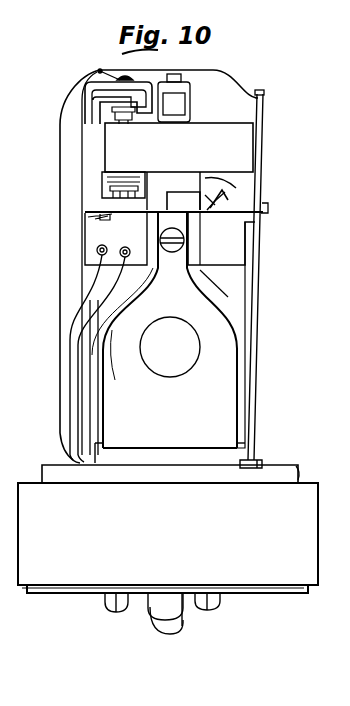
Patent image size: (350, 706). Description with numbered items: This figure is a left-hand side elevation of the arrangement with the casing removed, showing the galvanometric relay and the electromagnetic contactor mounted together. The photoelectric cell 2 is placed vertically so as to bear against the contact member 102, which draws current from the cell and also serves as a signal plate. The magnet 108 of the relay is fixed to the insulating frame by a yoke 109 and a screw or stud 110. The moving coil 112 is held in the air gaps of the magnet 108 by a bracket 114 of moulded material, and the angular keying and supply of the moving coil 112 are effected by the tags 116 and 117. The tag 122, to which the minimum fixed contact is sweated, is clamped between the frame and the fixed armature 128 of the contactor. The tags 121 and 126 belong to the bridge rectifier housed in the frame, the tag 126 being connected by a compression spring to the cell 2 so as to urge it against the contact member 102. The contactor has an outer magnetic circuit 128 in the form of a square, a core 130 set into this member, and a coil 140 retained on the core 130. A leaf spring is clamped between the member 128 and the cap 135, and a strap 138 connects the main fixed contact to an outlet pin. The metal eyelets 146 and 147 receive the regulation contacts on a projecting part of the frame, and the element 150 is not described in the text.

The cell 2 is at (256, 284).
The contact member 102 is at (262, 140).
The magnet 108 is at (112, 148).
The yoke 109 is at (192, 97).
The screw or stud 110 is at (175, 70).
The moving coil 112 is at (112, 133).
The bracket 114 is at (88, 135).
The tag 116 is at (80, 220).
The tag 117 is at (100, 71).
The tag 121 is at (217, 207).
The tag 122 is at (182, 198).
The tag 126 is at (245, 187).
The outer magnetic circuit 128 is at (228, 400).
The core 130 is at (148, 345).
The cap 135 is at (174, 465).
The strap 138 is at (112, 303).
The coil 140 is at (118, 320).
The metal eyelet 146 is at (92, 256).
The metal eyelet 147 is at (116, 245).
The lead wire 150 is at (184, 628).